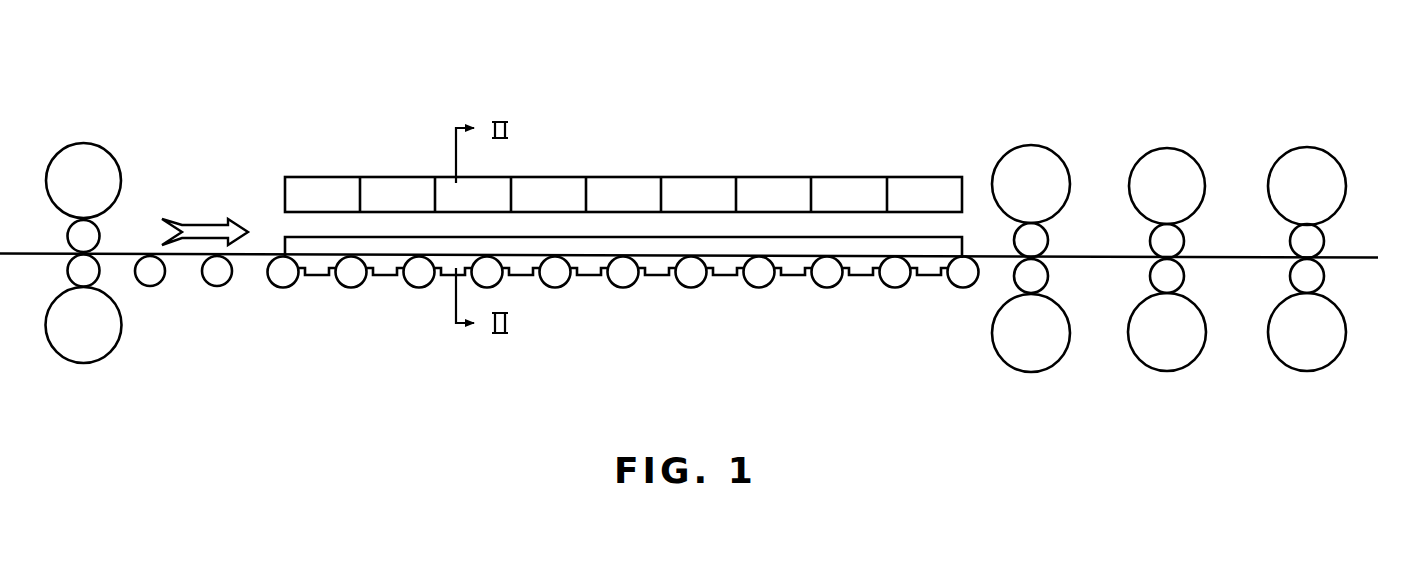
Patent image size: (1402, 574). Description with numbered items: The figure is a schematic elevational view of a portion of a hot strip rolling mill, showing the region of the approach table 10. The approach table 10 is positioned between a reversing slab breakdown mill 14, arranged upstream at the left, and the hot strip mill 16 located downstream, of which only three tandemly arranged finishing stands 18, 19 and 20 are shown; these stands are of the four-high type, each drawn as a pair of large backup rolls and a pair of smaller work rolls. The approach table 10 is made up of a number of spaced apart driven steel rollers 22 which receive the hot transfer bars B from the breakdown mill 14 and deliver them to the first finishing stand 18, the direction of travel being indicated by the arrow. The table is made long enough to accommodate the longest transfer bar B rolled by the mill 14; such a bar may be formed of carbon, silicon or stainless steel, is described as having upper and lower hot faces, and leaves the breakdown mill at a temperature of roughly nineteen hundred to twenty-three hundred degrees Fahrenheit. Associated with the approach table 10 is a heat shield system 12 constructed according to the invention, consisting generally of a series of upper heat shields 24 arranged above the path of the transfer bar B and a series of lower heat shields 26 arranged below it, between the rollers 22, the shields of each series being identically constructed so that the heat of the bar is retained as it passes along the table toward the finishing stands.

The approach table 10 is at (204, 288).
The heat shield system 12 is at (610, 188).
The reversing slab breakdown mill 14 is at (101, 150).
The hot strip mill 16 is at (1165, 213).
The first finishing stand 18 is at (1006, 162).
The second finishing stand 19 is at (1178, 160).
The third finishing stand 20 is at (1325, 150).
The driven steel rollers 22 is at (280, 285).
The upper heat shields 24 is at (398, 183).
The lower heat shields 26 is at (322, 275).
The hot transfer bar B is at (788, 240).